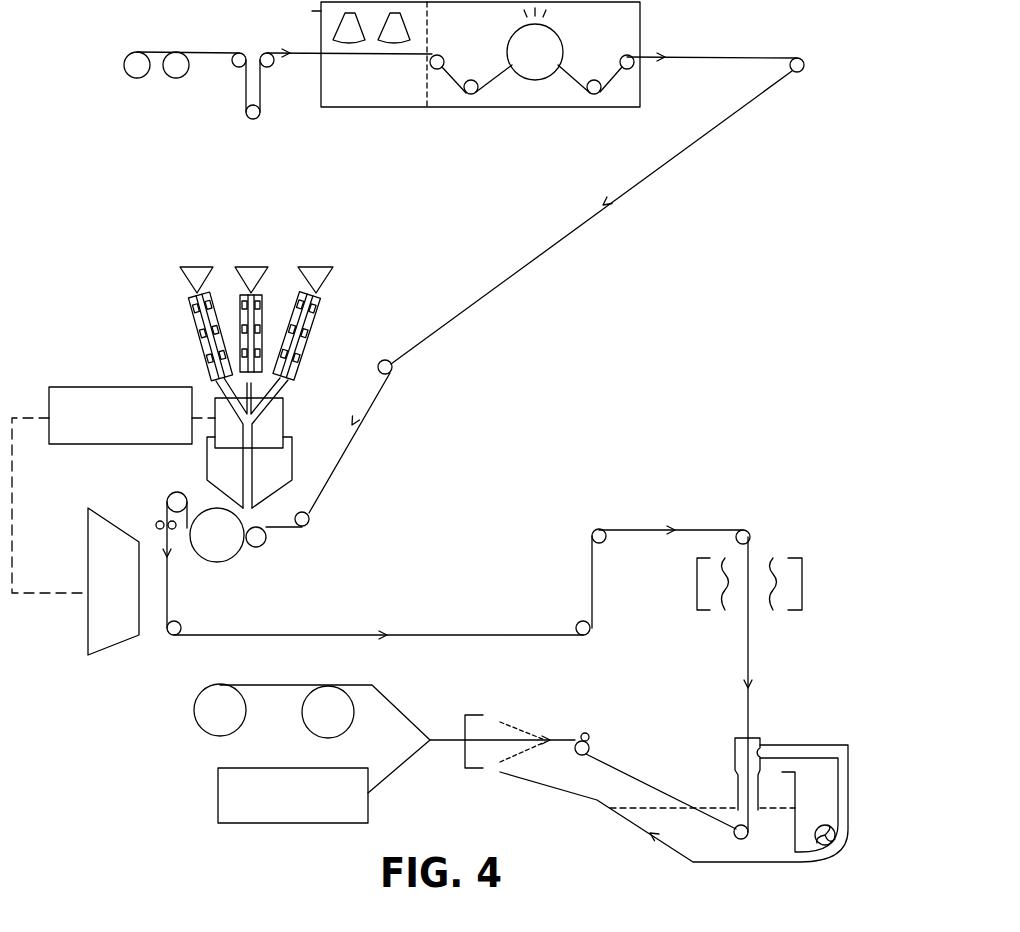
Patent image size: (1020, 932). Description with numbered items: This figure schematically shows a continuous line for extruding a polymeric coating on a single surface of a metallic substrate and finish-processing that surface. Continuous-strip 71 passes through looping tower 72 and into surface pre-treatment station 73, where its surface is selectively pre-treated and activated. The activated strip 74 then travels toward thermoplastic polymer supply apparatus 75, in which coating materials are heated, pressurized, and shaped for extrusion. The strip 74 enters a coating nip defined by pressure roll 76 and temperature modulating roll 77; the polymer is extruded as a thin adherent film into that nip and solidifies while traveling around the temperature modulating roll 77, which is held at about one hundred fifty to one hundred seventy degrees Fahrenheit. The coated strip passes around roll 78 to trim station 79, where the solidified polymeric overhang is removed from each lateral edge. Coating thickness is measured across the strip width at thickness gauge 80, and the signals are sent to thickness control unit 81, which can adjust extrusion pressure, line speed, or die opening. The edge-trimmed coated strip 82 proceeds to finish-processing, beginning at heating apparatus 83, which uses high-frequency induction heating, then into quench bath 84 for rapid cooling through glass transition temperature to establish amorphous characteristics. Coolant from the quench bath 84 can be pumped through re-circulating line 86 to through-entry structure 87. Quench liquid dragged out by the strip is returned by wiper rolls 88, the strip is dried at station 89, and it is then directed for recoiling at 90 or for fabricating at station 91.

The continuous-strip 71 is at (163, 50).
The looping tower 72 is at (257, 103).
The surface pre-treatment station 73 is at (490, 107).
The strip 74 is at (540, 250).
The thermoplastic polymer supply apparatus 75 is at (325, 322).
The pressure roll 76 is at (303, 343).
The temperature modulating roll 77 is at (208, 547).
The roll 78 is at (170, 499).
The trim station 79 is at (155, 522).
The thickness gauge 80 is at (86, 642).
The thickness control unit 81 is at (88, 385).
The edge-trimmed single-surface polymeric coated strip 82 is at (200, 640).
The heating apparatus 83 is at (800, 590).
The quench bath 84 is at (799, 839).
The re-circulating line 86 is at (848, 835).
The through-entry structure 87 is at (735, 757).
The wiper rolls 88 is at (590, 735).
The drying station 89 is at (518, 730).
The recoiling station 90 is at (268, 727).
The fabricating station 91 is at (283, 806).